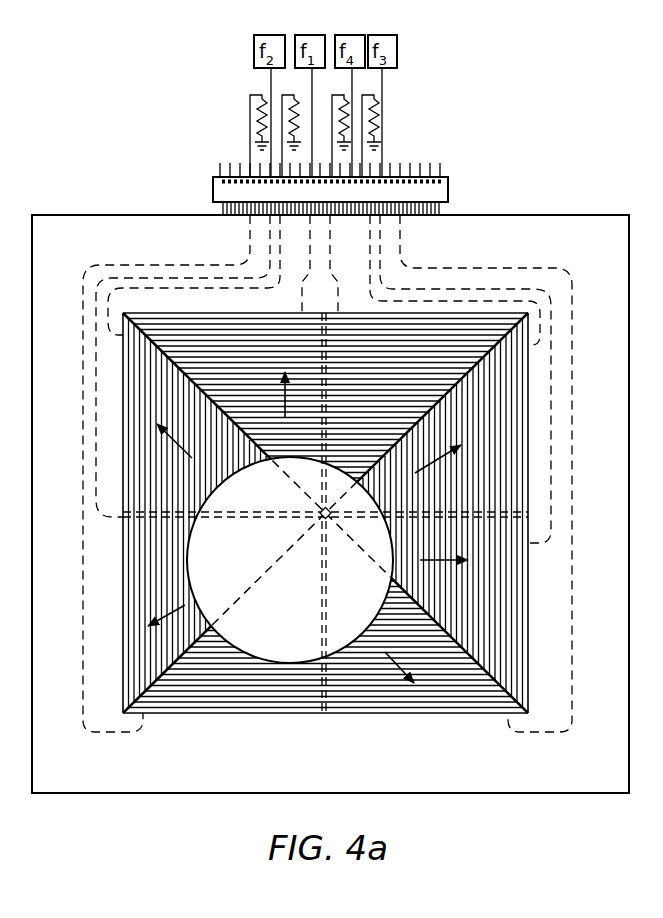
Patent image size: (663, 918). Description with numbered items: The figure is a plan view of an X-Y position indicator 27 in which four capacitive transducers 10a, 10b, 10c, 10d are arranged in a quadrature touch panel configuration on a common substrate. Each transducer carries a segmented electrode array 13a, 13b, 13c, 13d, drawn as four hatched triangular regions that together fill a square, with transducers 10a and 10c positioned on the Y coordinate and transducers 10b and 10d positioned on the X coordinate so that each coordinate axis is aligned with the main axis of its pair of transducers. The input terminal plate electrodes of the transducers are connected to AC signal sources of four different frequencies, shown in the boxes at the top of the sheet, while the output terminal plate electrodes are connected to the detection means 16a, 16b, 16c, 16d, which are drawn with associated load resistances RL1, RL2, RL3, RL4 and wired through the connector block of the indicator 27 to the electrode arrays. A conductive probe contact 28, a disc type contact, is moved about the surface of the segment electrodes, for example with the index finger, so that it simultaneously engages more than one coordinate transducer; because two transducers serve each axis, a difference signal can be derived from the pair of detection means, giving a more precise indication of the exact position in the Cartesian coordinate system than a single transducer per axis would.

The X-Y position indicator 27 is at (150, 211).
The transducer 10a is at (487, 307).
The transducer 10b is at (115, 677).
The transducer 10c is at (234, 722).
The transducer 10d is at (534, 590).
The segmented electrode array 13a is at (237, 328).
The segmented electrode array 13b is at (130, 422).
The segmented electrode array 13c is at (442, 700).
The segmented electrode array 13d is at (517, 438).
The conductive probe contact 28 is at (228, 560).
The detection means 16a is at (345, 109).
The detection means 16b is at (297, 100).
The detection means 16c is at (262, 112).
The detection means 16d is at (374, 116).
The load resistance RL1 is at (343, 104).
The load resistance RL2 is at (297, 108).
The load resistance RL3 is at (263, 130).
The load resistance RL4 is at (375, 132).